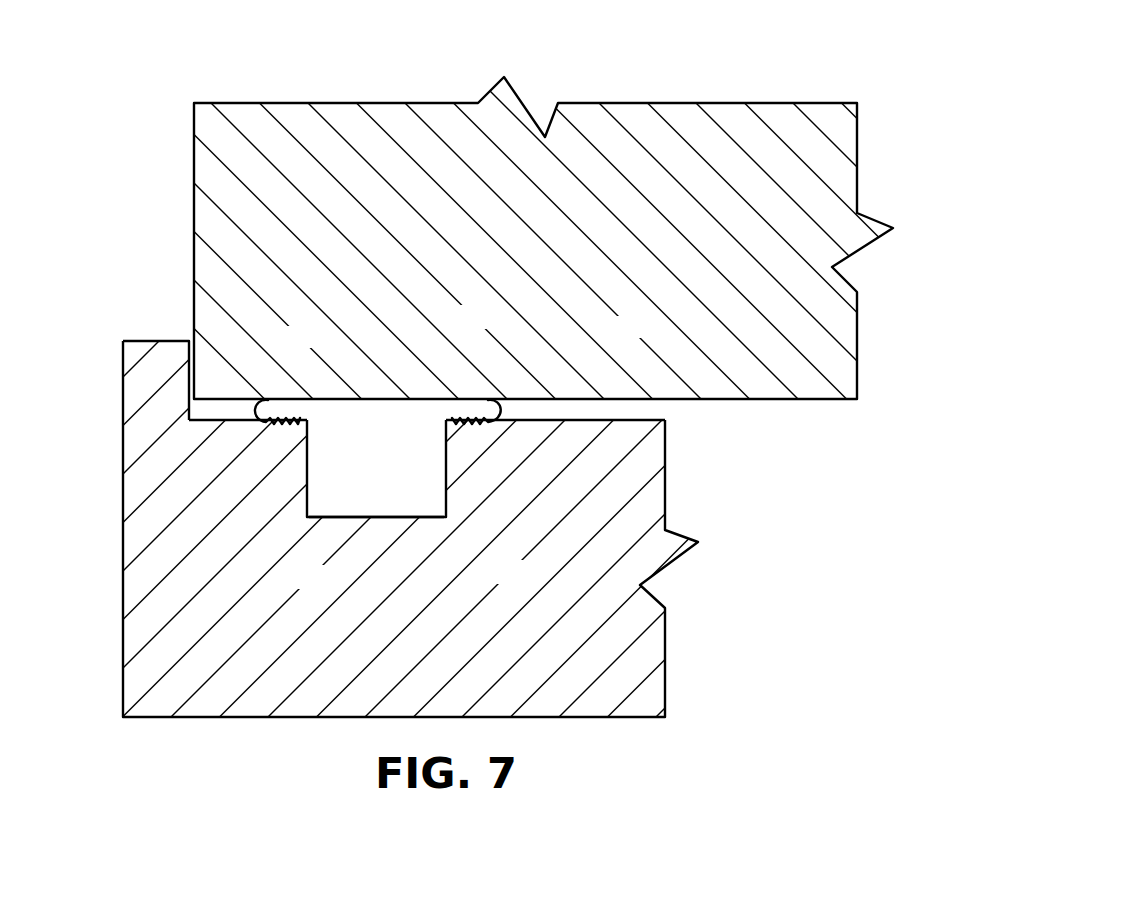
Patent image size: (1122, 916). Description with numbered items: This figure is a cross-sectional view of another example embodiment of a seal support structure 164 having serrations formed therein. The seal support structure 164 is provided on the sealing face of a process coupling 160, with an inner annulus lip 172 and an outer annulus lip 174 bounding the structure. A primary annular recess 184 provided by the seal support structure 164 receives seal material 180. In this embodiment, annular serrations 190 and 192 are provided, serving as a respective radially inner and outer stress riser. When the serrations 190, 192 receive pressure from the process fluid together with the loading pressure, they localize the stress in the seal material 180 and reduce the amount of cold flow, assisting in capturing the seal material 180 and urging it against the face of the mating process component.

The process coupling 160 is at (543, 508).
The seal support structure 164 is at (476, 513).
The inner annulus lip 172 is at (140, 340).
The outer annulus lip 174 is at (592, 418).
The seal material 180 is at (392, 480).
The primary annular recess 184 is at (313, 520).
The annular serration 190 is at (674, 117).
The annular serration 192 is at (478, 415).